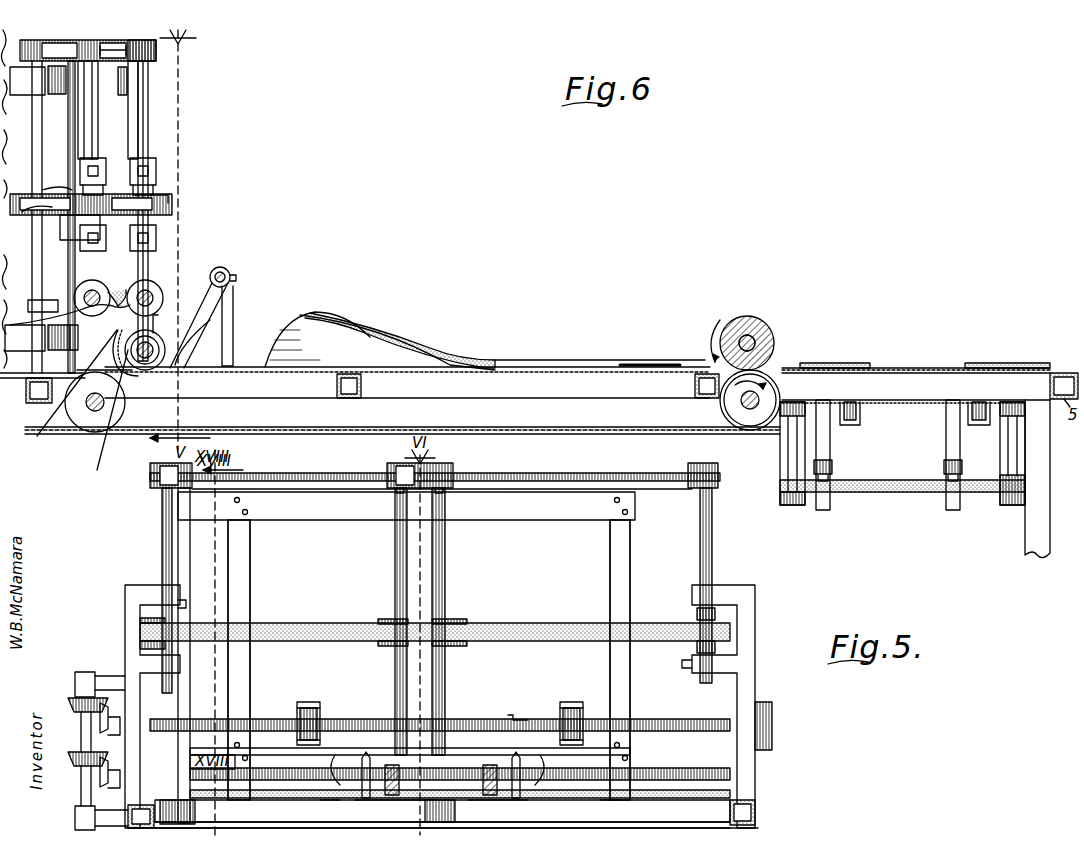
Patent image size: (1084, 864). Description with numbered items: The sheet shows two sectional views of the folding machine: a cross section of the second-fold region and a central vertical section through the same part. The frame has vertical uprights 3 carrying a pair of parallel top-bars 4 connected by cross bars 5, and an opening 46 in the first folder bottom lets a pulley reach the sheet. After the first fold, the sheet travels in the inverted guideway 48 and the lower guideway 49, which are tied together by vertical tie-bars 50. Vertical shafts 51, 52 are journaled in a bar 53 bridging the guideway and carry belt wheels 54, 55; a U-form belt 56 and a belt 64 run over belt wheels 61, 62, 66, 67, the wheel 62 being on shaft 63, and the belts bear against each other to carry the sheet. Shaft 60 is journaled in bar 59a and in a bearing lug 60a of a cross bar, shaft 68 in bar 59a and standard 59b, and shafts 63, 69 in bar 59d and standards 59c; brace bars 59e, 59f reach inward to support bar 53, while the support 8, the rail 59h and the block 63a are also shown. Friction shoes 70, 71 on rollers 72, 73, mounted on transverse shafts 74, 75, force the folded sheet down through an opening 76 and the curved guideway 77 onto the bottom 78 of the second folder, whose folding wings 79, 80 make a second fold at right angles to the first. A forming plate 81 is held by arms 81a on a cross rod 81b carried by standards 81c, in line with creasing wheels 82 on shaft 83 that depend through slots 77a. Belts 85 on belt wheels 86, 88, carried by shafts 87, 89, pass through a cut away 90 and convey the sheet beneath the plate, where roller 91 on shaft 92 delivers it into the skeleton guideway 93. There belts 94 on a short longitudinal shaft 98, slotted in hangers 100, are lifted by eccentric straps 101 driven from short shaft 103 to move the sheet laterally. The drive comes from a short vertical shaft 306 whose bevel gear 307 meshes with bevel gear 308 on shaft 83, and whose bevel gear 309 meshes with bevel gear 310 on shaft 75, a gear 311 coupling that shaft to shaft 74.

In FIG. 6, the vertical uprights 3 is at (1050, 488).
In FIG. 6, the top-bars 4 is at (532, 397).
In FIG. 5, the top-bars 4 is at (772, 810).
In FIG. 6, the cross bars 5 is at (365, 400).
In FIG. 5, the cross bars 5 is at (708, 814).
In FIG. 6, the support 8 is at (58, 350).
In FIG. 5, the opening 46 is at (538, 515).
In FIG. 6, the guideway 48 is at (123, 91).
In FIG. 6, the guideway 49 is at (59, 328).
In FIG. 5, the guideway 49 is at (532, 718).
In FIG. 6, the vertical tie-bars 50 is at (135, 122).
In FIG. 5, the vertical tie-bars 50 is at (250, 568).
In FIG. 6, the vertical shaft 51 is at (35, 136).
In FIG. 5, the vertical shaft 51 is at (393, 564).
In FIG. 6, the vertical shaft 52 is at (70, 125).
In FIG. 5, the vertical shaft 52 is at (446, 562).
In FIG. 6, the bar 53 is at (88, 50).
In FIG. 5, the bar 53 is at (406, 470).
In FIG. 6, the belt wheel 54 is at (28, 215).
In FIG. 5, the belt wheel 54 is at (380, 620).
In FIG. 6, the belt wheel 55 is at (40, 196).
In FIG. 5, the belt wheel 55 is at (463, 621).
In FIG. 6, the belt 56 is at (171, 201).
In FIG. 5, the belt 56 is at (546, 622).
In FIG. 5, the bar 59a is at (688, 473).
In FIG. 5, the standard 59b is at (128, 595).
In FIG. 6, the standards 59c is at (158, 186).
In FIG. 5, the standards 59c is at (754, 656).
In FIG. 6, the bar 59d is at (137, 40).
In FIG. 5, the brace bar 59e is at (202, 475).
In FIG. 6, the brace bar 59f is at (121, 78).
In FIG. 5, the top rail 59h is at (435, 470).
In FIG. 5, the shaft 60 is at (186, 558).
In FIG. 5, the bearing lug 60a is at (196, 818).
In FIG. 5, the belt wheel 61 is at (210, 621).
In FIG. 6, the belt wheel 62 is at (143, 162).
In FIG. 6, the shaft 63 is at (95, 113).
In FIG. 6, the slide block 63a is at (98, 160).
In FIG. 6, the belt 64 is at (75, 228).
In FIG. 5, the belt wheel 66 is at (190, 620).
In FIG. 6, the belt wheel 67 is at (151, 200).
In FIG. 5, the belt wheel 67 is at (682, 622).
In FIG. 5, the shaft 68 is at (162, 548).
In FIG. 6, the shaft 69 is at (148, 136).
In FIG. 5, the shaft 69 is at (711, 556).
In FIG. 6, the friction shoe 70 is at (92, 280).
In FIG. 6, the friction shoe 71 is at (126, 288).
In FIG. 5, the friction shoe 71 is at (303, 702).
In FIG. 6, the roller 72 is at (82, 270).
In FIG. 6, the roller 73 is at (154, 291).
In FIG. 5, the roller 73 is at (313, 712).
In FIG. 6, the transverse shaft 74 is at (82, 297).
In FIG. 6, the transverse shaft 75 is at (162, 304).
In FIG. 5, the transverse shaft 75 is at (481, 719).
In FIG. 6, the opening 76 is at (67, 391).
In FIG. 6, the curved guideway 77 is at (104, 413).
In FIG. 5, the curved guideway 77 is at (626, 791).
In FIG. 5, the slots 77a is at (353, 759).
In FIG. 6, the bottom 78 is at (407, 382).
In FIG. 5, the bottom 78 is at (442, 813).
In FIG. 6, the folding wing 79 is at (300, 312).
In FIG. 6, the folding wing 80 is at (389, 332).
In FIG. 6, the forming plate 81 is at (535, 364).
In FIG. 5, the forming plate 81 is at (382, 794).
In FIG. 6, the arms 81a is at (211, 301).
In FIG. 5, the arms 81a is at (483, 766).
In FIG. 6, the cross rod 81b is at (222, 269).
In FIG. 6, the standards 81c is at (233, 322).
In FIG. 6, the creasing wheels 82 is at (158, 334).
In FIG. 5, the creasing wheels 82 is at (338, 797).
In FIG. 6, the transverse shaft 83 is at (163, 353).
In FIG. 5, the transverse shaft 83 is at (669, 773).
In FIG. 6, the belts 85 is at (667, 364).
In FIG. 5, the belts 85 is at (367, 792).
In FIG. 6, the belt wheels 86 is at (77, 428).
In FIG. 6, the transverse shaft 87 is at (93, 411).
In FIG. 6, the belt-wheels 88 is at (745, 400).
In FIG. 6, the transverse shaft 89 is at (750, 410).
In FIG. 6, the cut away 90 is at (125, 374).
In FIG. 5, the cut away 90 is at (368, 772).
In FIG. 6, the roller 91 is at (747, 323).
In FIG. 6, the shaft 92 is at (755, 336).
In FIG. 6, the guideway 93 is at (920, 372).
In FIG. 6, the belts 94 is at (850, 363).
In FIG. 6, the short longitudinal shaft 98 is at (906, 400).
In FIG. 6, the hangers 100 is at (780, 476).
In FIG. 6, the eccentric straps 101 is at (948, 438).
In FIG. 6, the short shaft 103 is at (902, 498).
In FIG. 5, the short vertical shaft 306 is at (83, 818).
In FIG. 5, the bevel gear 307 is at (78, 772).
In FIG. 5, the bevel gear 308 is at (84, 786).
In FIG. 5, the bevel gear 309 is at (77, 702).
In FIG. 5, the bevel gear 310 is at (85, 722).
In FIG. 5, the gear 311 is at (772, 734).